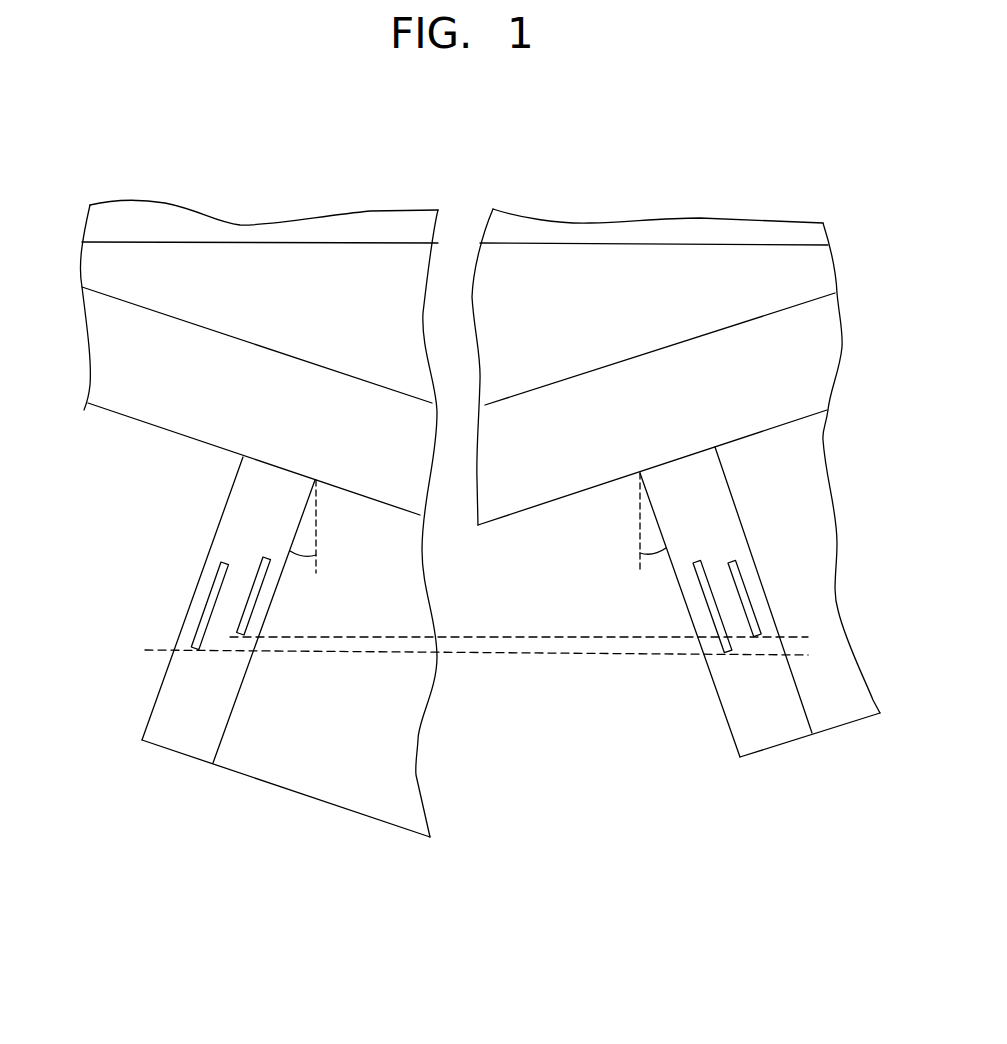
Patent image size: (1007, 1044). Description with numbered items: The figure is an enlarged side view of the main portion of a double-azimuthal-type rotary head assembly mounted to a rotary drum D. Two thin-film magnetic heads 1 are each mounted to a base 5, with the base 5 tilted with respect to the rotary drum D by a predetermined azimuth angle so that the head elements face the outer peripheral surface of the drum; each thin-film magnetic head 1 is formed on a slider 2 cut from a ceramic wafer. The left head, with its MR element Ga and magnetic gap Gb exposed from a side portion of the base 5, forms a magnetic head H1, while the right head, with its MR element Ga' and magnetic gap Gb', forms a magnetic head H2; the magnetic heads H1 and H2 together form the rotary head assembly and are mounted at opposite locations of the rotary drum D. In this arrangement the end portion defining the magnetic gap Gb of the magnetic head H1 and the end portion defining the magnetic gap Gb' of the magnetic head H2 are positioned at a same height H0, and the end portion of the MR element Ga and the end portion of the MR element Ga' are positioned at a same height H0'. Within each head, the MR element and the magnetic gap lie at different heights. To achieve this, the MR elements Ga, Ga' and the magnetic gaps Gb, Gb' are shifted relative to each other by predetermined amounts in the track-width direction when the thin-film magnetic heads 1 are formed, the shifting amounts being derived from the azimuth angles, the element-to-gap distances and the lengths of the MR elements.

The thin-film magnetic head 1 is at (163, 762).
The slider 2 is at (323, 803).
The base 5 is at (117, 363).
The rotary drum D is at (357, 233).
The MR element Ga is at (210, 557).
The magnetic gap Gb is at (182, 590).
The MR element Ga' is at (770, 568).
The magnetic gap Gb' is at (738, 556).
The height H0 is at (476, 695).
The height H0' is at (519, 688).
The magnetic head H1 is at (103, 546).
The magnetic head H2 is at (660, 724).